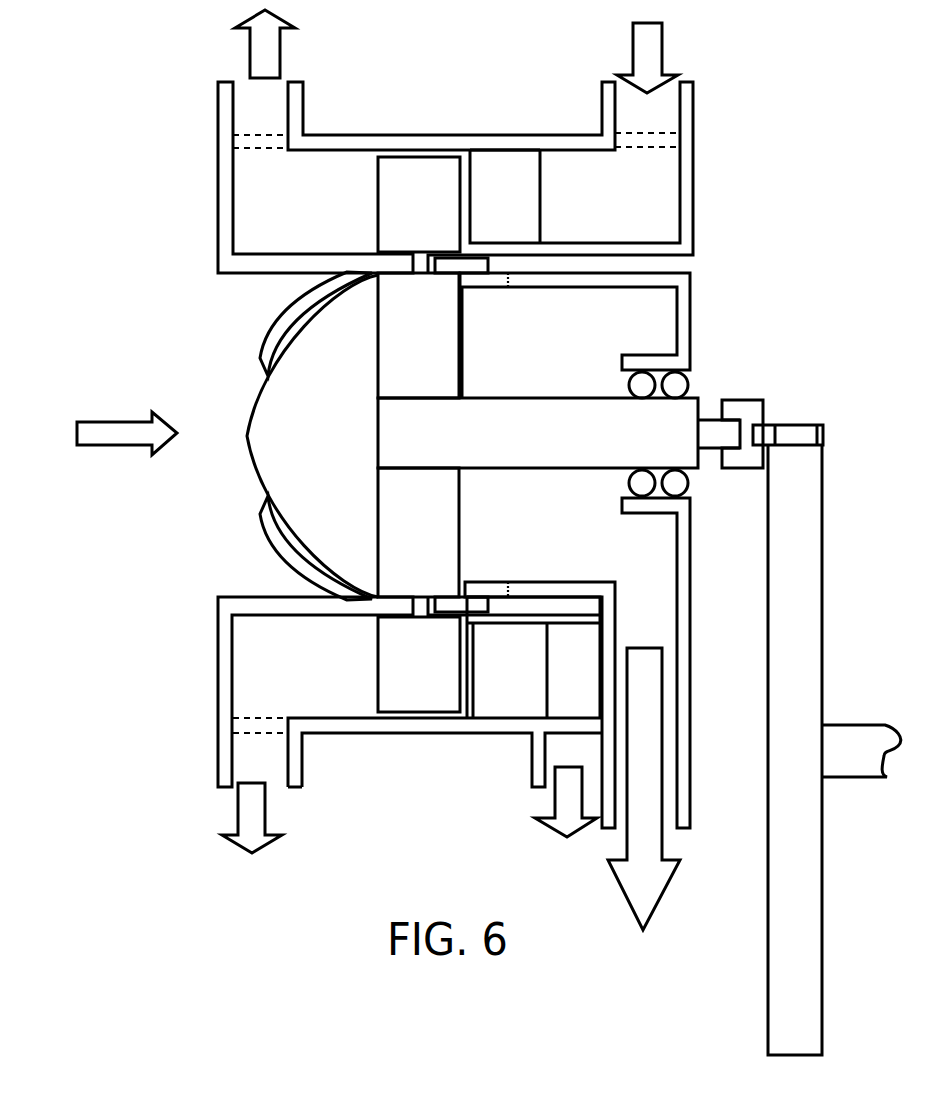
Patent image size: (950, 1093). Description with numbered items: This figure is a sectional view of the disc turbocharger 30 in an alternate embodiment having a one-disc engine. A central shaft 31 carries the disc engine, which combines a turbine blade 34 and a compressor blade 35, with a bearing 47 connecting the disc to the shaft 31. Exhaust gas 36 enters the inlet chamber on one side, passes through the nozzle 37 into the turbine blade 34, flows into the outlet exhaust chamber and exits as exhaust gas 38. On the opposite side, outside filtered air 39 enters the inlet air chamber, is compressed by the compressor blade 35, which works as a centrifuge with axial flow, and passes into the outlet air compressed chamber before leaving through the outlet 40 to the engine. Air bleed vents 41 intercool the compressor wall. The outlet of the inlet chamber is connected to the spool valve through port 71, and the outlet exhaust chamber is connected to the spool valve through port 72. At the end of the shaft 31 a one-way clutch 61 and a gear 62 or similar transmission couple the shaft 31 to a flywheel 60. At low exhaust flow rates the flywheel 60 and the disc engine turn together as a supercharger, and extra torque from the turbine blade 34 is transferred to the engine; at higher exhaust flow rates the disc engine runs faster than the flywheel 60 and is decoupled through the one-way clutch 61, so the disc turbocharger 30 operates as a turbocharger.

The disc turbocharger 30 is at (790, 172).
The shaft 31 is at (700, 402).
The turbine blade 34 is at (400, 155).
The compressor blade 35 is at (375, 330).
The exhaust gas 36 is at (662, 40).
The nozzle 37 is at (540, 160).
The exhaust gas 38 is at (282, 55).
The outside filtered air 39 is at (115, 422).
The outlet 40 is at (647, 923).
The air bleed vents 41 is at (510, 288).
The bearing 47 is at (688, 482).
The flywheel 60 is at (823, 542).
The one-way clutch 61 is at (750, 400).
The gear 62 is at (795, 422).
The port 71 is at (548, 822).
The port 72 is at (267, 825).